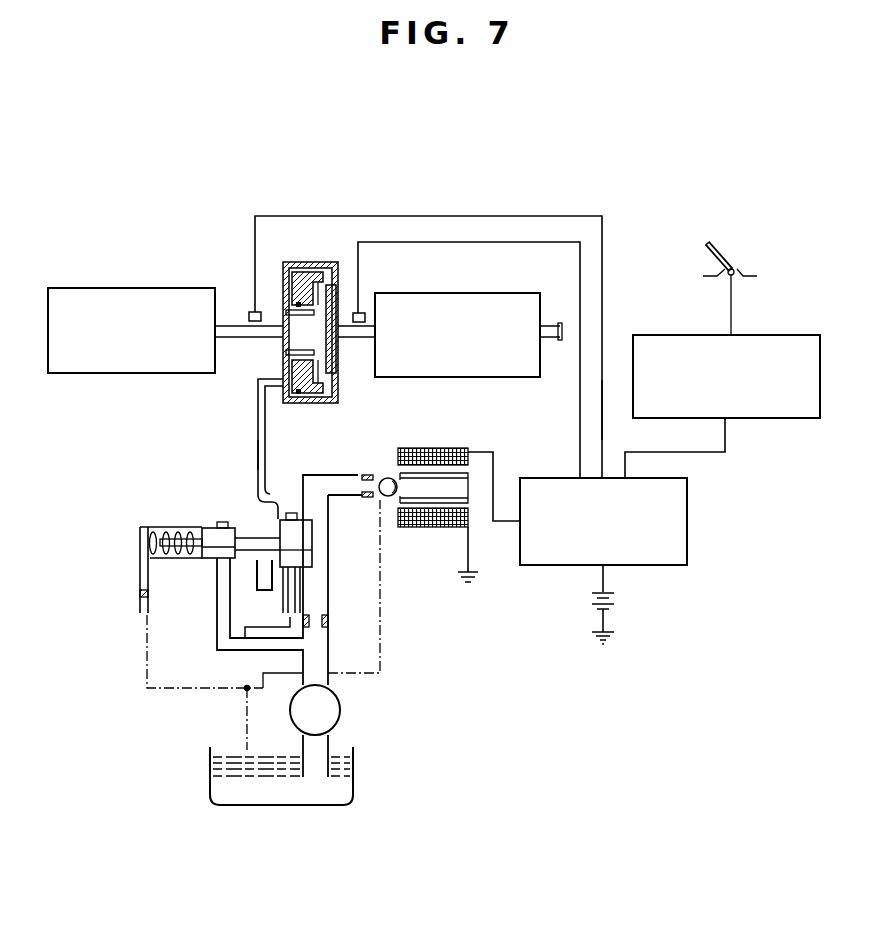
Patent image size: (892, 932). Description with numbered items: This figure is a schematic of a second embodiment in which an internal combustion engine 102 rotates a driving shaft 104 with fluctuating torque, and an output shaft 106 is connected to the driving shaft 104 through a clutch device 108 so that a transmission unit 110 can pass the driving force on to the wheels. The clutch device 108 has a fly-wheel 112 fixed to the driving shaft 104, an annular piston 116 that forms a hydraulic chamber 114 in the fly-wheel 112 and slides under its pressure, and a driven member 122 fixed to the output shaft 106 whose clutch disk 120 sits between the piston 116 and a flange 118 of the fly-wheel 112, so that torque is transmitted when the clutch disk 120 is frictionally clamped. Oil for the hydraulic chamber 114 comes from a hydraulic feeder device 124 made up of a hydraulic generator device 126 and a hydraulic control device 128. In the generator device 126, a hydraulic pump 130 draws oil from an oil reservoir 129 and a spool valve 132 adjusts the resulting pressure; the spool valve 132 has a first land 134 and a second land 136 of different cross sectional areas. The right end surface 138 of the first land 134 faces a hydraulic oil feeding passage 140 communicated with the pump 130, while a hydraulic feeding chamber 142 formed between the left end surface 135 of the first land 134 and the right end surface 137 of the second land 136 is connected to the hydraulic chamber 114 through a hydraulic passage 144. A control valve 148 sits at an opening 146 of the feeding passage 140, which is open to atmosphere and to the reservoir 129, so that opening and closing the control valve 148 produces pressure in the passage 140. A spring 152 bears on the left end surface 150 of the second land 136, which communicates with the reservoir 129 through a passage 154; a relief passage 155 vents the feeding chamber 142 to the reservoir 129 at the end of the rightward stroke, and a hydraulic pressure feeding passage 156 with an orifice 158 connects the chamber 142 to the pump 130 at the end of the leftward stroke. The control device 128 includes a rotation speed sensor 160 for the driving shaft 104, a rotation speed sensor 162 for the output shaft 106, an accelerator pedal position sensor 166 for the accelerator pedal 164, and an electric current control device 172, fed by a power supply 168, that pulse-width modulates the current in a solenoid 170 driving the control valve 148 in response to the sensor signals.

The internal combustion engine 102 is at (168, 288).
The driving shaft 104 is at (250, 337).
The output shaft 106 is at (355, 346).
The clutch device 108 is at (320, 327).
The transmission unit 110 is at (474, 296).
The fly-wheel 112 is at (288, 281).
The hydraulic chamber 114 is at (283, 369).
The annular piston 116 is at (325, 281).
The flange 118 is at (337, 393).
The clutch disk 120 is at (313, 395).
The driven member 122 is at (339, 365).
The hydraulic feeder device 124 is at (433, 668).
The hydraulic generator device 126 is at (362, 592).
The hydraulic control device 128 is at (610, 356).
The oil reservoir 129 is at (208, 777).
The hydraulic pump 130 is at (341, 710).
The spool valve 132 is at (224, 574).
The first land 134 is at (300, 528).
The left end surface of the first land 135 is at (278, 496).
The second land 136 is at (215, 521).
The right end surface of the second land 137 is at (240, 530).
The right end surface of the first land 138 is at (318, 560).
The hydraulic oil feeding passage 140 is at (318, 596).
The hydraulic feeding chamber 142 is at (248, 558).
The hydraulic passage 144 is at (266, 448).
The opening 146 is at (360, 478).
The control valve 148 is at (383, 477).
The left end surface of the second land 150 is at (201, 548).
The spring 152 is at (153, 530).
The passage 154 is at (140, 584).
The relief passage 155 is at (284, 598).
The hydraulic pressure feeding passage 156 is at (218, 636).
The orifice 158 is at (325, 622).
The rotation speed sensor 160 is at (253, 312).
The rotation speed sensor 162 is at (369, 305).
The accelerator pedal 164 is at (718, 250).
The accelerator pedal position sensor 166 is at (766, 419).
The power supply 168 is at (612, 597).
The solenoid 170 is at (452, 448).
The electric current control device 172 is at (542, 566).